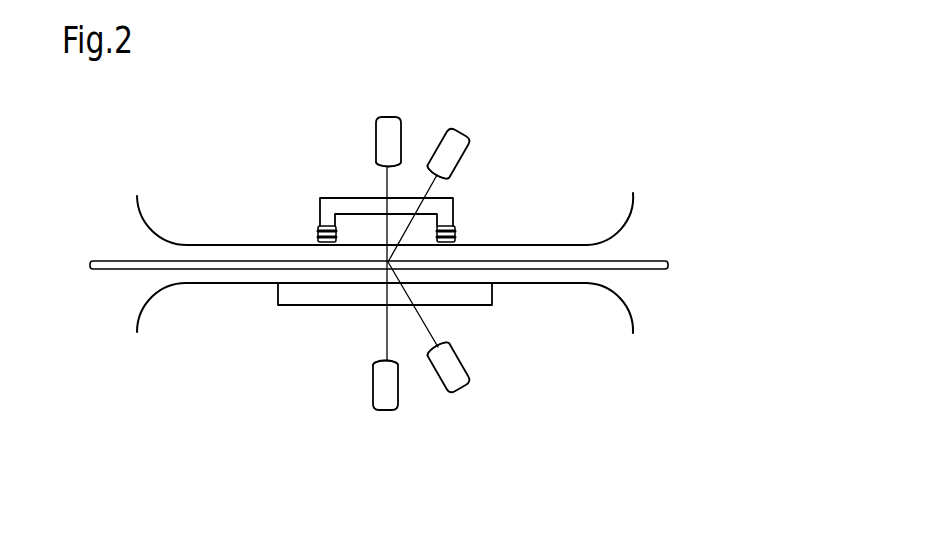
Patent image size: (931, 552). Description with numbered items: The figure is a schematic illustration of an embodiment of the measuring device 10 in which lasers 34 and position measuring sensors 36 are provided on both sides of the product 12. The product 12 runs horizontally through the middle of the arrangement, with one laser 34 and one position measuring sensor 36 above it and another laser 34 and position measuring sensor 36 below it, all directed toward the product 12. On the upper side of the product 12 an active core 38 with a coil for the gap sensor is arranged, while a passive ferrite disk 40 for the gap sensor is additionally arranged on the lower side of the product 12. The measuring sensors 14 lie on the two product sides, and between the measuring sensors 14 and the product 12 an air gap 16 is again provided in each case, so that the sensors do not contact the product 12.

The measuring device 10 is at (555, 130).
The product 12 is at (680, 260).
The measuring sensors 14 is at (119, 210).
The air gap 16 is at (617, 246).
The lasers 34 is at (393, 107).
The position measuring sensors 36 is at (466, 122).
The active core 38 is at (463, 200).
The passive ferrite disk 40 is at (483, 314).